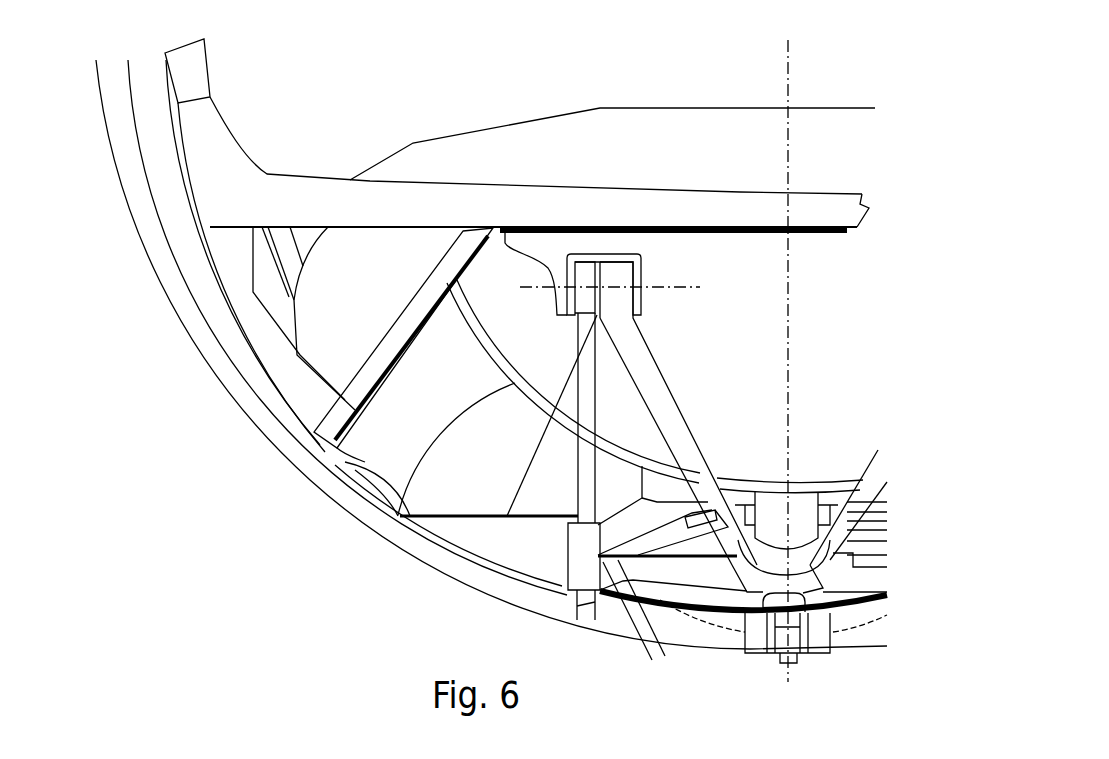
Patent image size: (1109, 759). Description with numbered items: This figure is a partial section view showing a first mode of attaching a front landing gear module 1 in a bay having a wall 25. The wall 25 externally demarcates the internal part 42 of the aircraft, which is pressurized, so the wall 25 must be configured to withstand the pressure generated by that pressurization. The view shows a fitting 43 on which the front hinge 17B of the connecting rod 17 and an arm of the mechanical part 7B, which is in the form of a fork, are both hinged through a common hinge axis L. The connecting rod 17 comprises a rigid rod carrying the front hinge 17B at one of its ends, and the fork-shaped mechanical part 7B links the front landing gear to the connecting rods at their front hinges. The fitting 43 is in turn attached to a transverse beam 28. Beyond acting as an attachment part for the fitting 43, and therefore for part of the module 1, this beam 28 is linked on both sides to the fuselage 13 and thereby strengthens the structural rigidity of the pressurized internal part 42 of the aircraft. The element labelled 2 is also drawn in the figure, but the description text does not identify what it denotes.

The module 1 is at (466, 602).
The inner panel structure 2 is at (420, 555).
The fuselage 13 is at (135, 200).
The connecting rod 17 is at (578, 490).
The front hinge 17B is at (575, 314).
The mechanical part 7B is at (657, 366).
The wall 25 is at (555, 228).
The transverse beam 28 is at (340, 192).
The internal part 42 is at (242, 98).
The fitting 43 is at (647, 250).
The hinge axis L is at (660, 288).